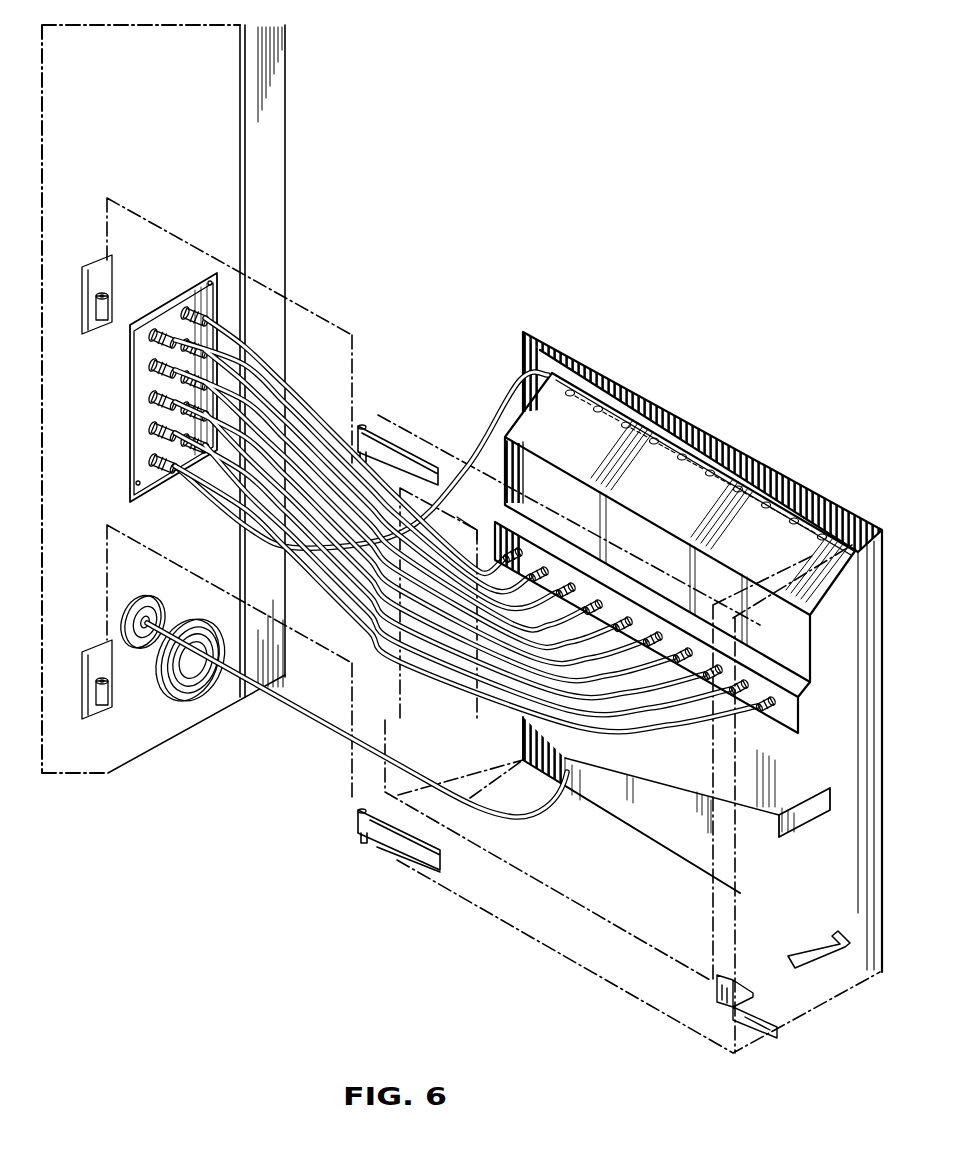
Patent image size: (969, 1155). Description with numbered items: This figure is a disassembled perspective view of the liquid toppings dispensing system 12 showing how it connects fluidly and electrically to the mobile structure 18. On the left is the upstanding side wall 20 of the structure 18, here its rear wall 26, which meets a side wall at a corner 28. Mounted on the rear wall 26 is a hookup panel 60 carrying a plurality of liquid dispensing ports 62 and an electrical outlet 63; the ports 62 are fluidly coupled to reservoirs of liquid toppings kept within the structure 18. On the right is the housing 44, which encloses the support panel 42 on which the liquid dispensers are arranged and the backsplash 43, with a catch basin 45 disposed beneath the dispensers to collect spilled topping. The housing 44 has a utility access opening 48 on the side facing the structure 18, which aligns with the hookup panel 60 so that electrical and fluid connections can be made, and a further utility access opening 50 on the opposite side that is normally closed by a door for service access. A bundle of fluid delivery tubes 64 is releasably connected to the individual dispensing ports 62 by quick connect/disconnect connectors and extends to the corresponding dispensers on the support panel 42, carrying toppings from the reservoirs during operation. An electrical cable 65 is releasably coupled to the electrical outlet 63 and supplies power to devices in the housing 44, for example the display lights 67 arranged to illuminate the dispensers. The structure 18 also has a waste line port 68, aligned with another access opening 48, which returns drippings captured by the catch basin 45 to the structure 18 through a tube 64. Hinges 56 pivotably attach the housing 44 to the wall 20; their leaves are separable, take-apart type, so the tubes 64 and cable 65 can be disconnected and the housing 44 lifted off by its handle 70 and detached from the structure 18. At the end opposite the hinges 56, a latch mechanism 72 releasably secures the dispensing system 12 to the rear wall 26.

The liquid toppings dispensing system 12 is at (765, 411).
The mobile structure 18 is at (303, 99).
The upstanding side wall 20 is at (284, 181).
The rear wall 26 is at (183, 107).
The corner 28 is at (285, 252).
The support panel 42 is at (838, 709).
The backsplash 43 is at (682, 740).
The housing 44 is at (845, 509).
The catch basin 45 is at (791, 829).
The utility access opening 48 is at (473, 530).
The utility access opening 50 is at (653, 950).
The hinge 56 is at (82, 268).
The hookup panel 60 is at (173, 301).
The liquid dispensing port 62 is at (146, 368).
The electrical outlet 63 is at (146, 478).
The fluid delivery tube 64 is at (300, 421).
The electrical cable 65 is at (218, 507).
The display light 67 is at (752, 488).
The waste line port 68 is at (158, 593).
The handle 70 is at (817, 967).
The latch mechanism 72 is at (773, 1036).